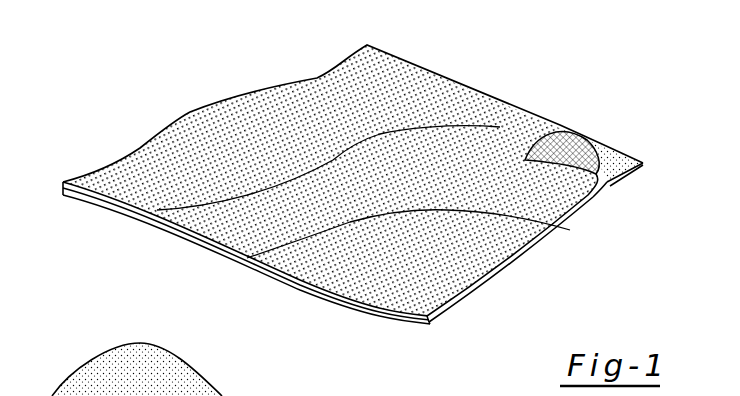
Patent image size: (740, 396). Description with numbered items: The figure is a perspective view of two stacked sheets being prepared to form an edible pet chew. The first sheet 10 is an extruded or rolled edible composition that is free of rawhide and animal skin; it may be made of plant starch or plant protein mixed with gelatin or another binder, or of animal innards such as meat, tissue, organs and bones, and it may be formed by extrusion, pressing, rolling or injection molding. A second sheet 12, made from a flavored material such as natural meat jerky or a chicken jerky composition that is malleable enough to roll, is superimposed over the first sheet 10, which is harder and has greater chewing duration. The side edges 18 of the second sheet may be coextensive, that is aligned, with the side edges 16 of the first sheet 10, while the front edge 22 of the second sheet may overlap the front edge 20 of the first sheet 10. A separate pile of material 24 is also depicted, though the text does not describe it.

The first sheet 10 is at (604, 160).
The second sheet 12 is at (418, 63).
The side edges of the first sheet 16 is at (586, 137).
The side edges of the second sheet 18 is at (490, 95).
The front edge of the first sheet 20 is at (620, 182).
The front edge of the second sheet 22 is at (510, 260).
The pile of material 24 is at (70, 377).